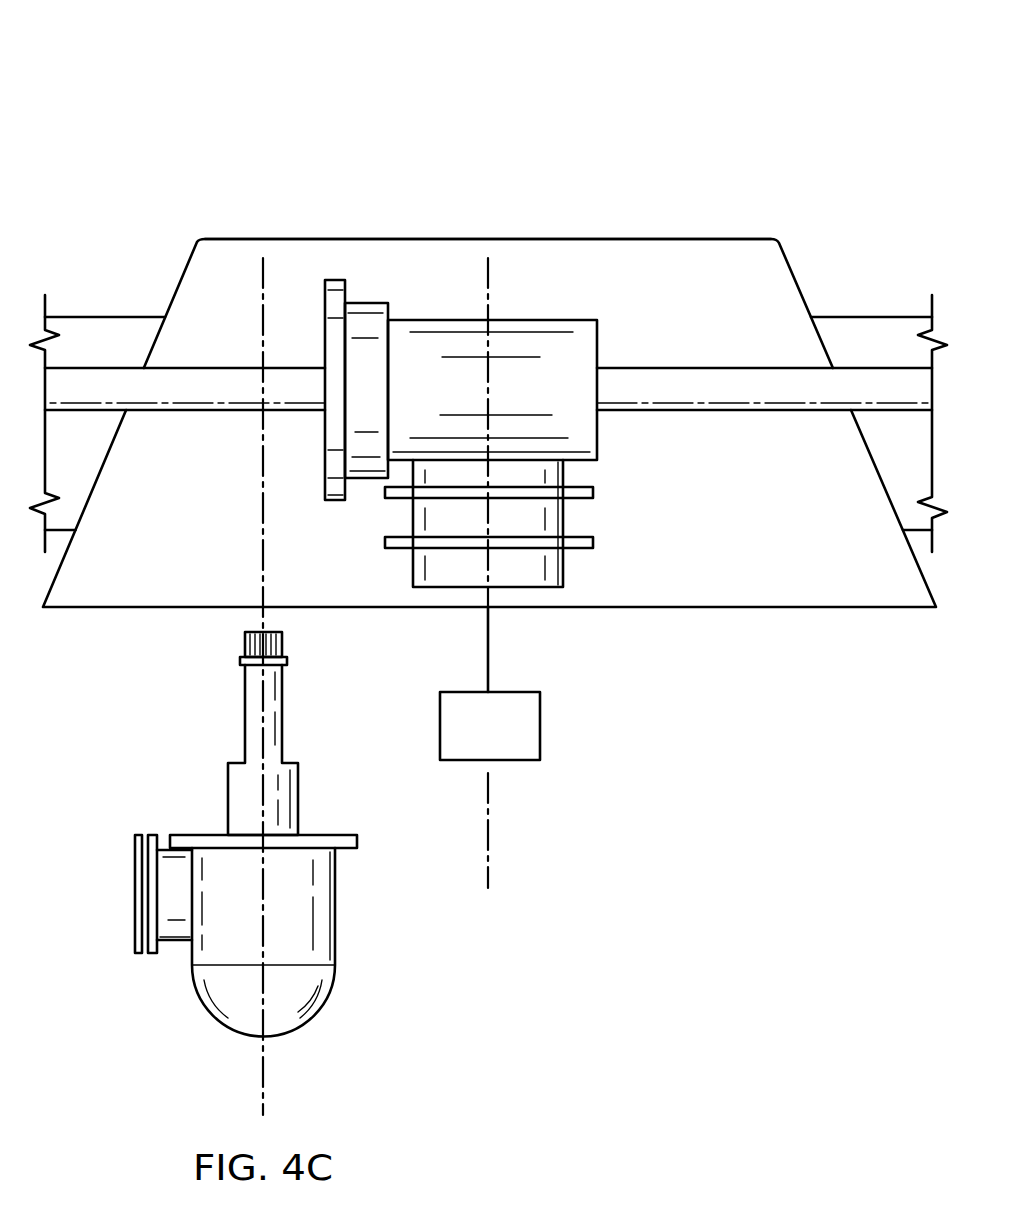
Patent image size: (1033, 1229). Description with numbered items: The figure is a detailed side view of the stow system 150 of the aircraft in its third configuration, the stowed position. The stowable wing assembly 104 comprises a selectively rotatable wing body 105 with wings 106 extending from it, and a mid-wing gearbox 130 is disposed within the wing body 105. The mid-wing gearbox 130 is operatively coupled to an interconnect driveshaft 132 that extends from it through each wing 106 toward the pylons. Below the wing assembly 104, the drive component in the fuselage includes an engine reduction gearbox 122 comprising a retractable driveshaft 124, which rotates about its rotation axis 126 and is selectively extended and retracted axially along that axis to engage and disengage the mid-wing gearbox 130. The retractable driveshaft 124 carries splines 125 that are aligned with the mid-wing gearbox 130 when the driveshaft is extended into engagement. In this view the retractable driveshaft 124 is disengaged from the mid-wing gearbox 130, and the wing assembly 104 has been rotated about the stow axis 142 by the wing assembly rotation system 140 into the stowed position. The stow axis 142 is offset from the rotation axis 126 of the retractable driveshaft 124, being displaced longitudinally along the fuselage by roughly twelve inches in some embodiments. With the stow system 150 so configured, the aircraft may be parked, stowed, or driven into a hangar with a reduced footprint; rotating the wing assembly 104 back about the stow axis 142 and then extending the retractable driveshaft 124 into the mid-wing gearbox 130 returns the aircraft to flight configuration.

The stow system 150 is at (237, 120).
The stowable wing assembly 104 is at (720, 242).
The selectively rotatable wing body 105 is at (580, 241).
The wing 106 is at (107, 317).
The mid-wing gearbox 130 is at (546, 320).
The interconnect driveshaft 132 is at (222, 368).
The wing assembly rotation system 140 is at (541, 724).
The stow axis 142 is at (490, 873).
The engine reduction gearbox 122 is at (336, 903).
The retractable driveshaft 124 is at (283, 717).
The splines 125 is at (283, 645).
The rotation axis 126 is at (264, 1102).